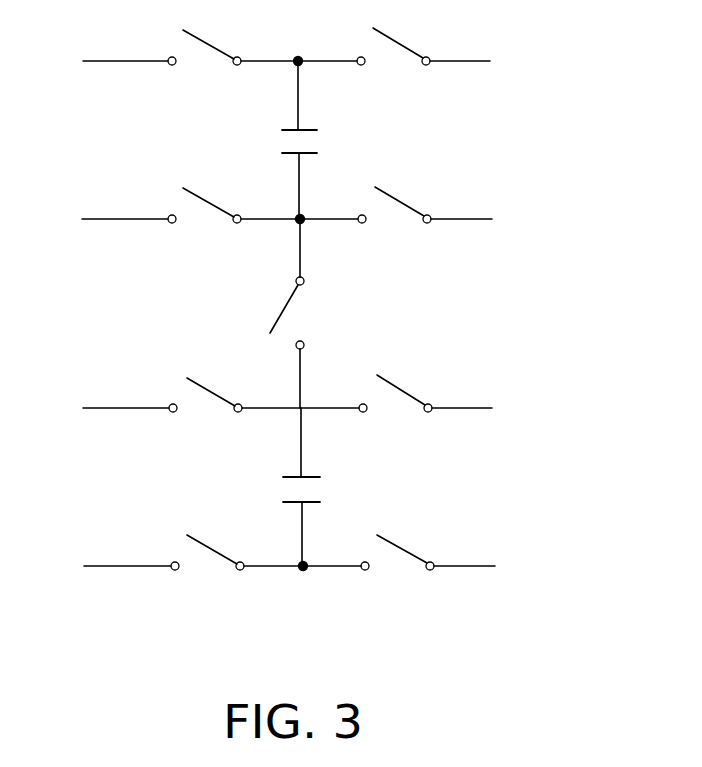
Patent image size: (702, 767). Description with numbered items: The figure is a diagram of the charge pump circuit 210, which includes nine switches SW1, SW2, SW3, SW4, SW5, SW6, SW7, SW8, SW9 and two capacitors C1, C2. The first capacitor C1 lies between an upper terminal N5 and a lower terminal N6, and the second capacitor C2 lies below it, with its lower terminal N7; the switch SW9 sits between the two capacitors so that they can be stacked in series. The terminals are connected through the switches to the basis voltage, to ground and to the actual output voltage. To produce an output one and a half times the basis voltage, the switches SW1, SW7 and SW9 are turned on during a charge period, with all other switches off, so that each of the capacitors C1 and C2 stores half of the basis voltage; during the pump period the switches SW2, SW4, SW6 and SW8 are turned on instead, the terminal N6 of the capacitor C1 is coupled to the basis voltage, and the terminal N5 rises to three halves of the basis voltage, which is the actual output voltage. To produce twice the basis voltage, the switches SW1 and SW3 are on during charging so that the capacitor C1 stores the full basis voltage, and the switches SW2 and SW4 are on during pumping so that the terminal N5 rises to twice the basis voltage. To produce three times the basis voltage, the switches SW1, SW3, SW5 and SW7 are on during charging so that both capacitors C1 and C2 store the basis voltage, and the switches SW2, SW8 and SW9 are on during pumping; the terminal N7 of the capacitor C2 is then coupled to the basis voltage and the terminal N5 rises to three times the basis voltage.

The charge pump circuit 210 is at (294, 344).
The switch SW1 is at (198, 70).
The switch SW2 is at (397, 72).
The switch SW3 is at (198, 228).
The switch SW4 is at (388, 230).
The switch SW5 is at (200, 417).
The switch SW6 is at (400, 420).
The switch SW7 is at (202, 575).
The switch SW8 is at (392, 575).
The switch SW9 is at (315, 313).
The capacitor C1 is at (319, 143).
The capacitor C2 is at (320, 492).
The terminal N5 is at (302, 42).
The terminal N6 is at (317, 205).
The terminal N7 is at (320, 589).